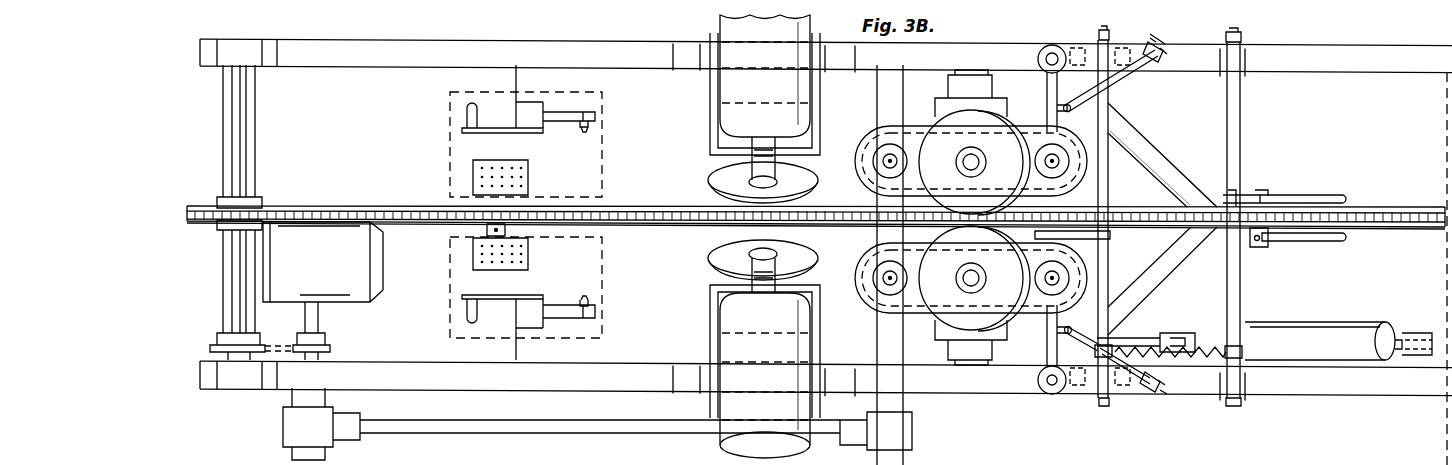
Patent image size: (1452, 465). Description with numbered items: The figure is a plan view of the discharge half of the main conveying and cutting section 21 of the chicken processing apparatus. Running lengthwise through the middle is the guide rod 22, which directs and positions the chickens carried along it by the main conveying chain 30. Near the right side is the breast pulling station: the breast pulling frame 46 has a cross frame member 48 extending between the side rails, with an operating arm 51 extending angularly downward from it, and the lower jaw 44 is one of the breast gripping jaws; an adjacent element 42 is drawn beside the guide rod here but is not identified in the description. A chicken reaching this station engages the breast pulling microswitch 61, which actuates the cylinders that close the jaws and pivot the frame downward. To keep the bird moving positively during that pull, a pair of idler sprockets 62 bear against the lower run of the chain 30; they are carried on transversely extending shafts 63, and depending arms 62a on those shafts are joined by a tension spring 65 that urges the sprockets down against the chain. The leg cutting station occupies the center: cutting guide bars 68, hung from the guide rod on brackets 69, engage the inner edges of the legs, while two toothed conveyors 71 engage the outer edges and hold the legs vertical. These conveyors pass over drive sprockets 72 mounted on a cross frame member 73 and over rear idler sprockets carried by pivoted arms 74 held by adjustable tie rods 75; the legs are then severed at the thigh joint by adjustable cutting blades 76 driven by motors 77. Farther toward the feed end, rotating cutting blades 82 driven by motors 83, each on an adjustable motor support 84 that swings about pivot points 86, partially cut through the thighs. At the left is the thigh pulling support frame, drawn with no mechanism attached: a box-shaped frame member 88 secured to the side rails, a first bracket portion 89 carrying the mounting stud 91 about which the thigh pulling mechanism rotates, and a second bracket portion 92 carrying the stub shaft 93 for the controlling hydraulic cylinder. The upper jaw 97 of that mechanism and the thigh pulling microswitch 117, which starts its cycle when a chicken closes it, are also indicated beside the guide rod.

The main conveying and cutting section 21 is at (1440, 27).
The guide rod 22 is at (306, 206).
The main chicken conveying chain 30 is at (188, 205).
The bar 42 is at (1296, 189).
The lower jaw 44 is at (1330, 245).
The breast pulling frame 46 is at (1171, 153).
The cross frame member 48 is at (1112, 140).
The operating arm 51 is at (1130, 338).
The breast pulling microswitch 61 is at (1258, 250).
The idler sprockets 62 is at (1240, 198).
The depending arms 62a is at (1097, 352).
The transversely extending shafts 63 is at (1108, 188).
The tension spring 65 is at (1190, 360).
The cutting guide bars 68 is at (1227, 292).
The brackets 69 is at (1365, 328).
The toothed conveyors 71 is at (877, 183).
The drive sprockets 72 is at (872, 140).
The cross frame member 73 is at (877, 90).
The pivoted arms 74 is at (1047, 113).
The adjustable tie rods 75 is at (1118, 88).
The adjustable cutting blades 76 is at (950, 140).
The motors 77 is at (1005, 101).
The cutting blades 82 is at (712, 172).
The motors 83 is at (720, 22).
The adjustable motor support 84 is at (710, 122).
The pivot points 86 is at (450, 130).
The box-shaped frame member 88 is at (530, 102).
The first bracket portion 89 is at (506, 132).
The mounting stud 91 is at (466, 108).
The second bracket portion 92 is at (562, 120).
The stub shaft 93 is at (584, 130).
The upper jaw 97 is at (530, 178).
The thigh pulling microswitch 117 is at (487, 230).